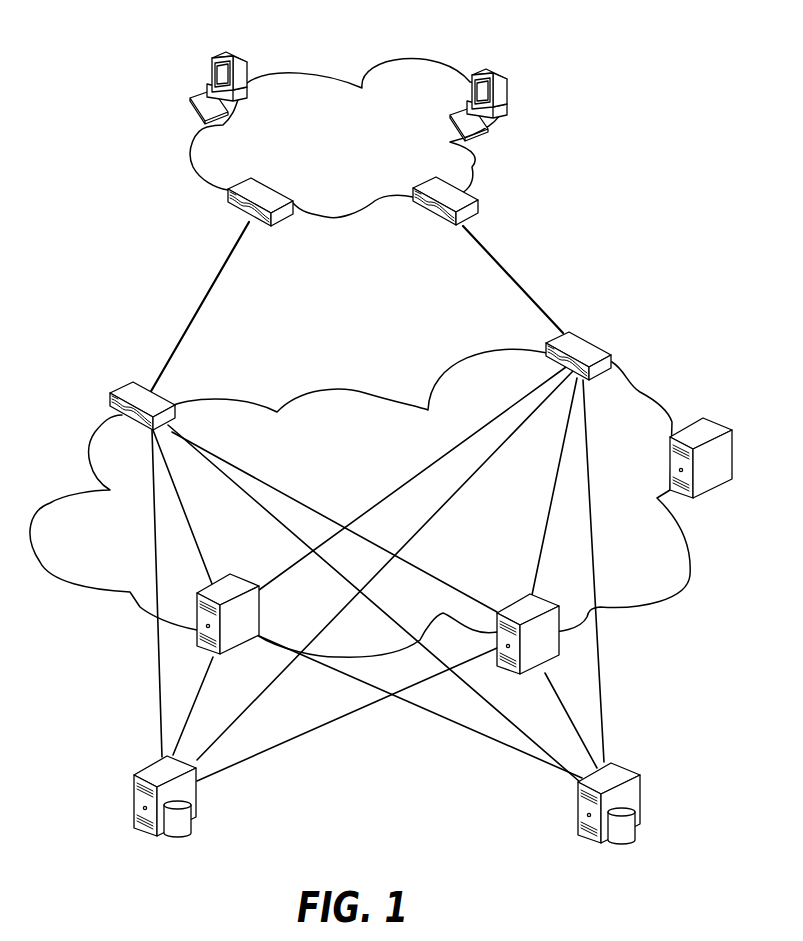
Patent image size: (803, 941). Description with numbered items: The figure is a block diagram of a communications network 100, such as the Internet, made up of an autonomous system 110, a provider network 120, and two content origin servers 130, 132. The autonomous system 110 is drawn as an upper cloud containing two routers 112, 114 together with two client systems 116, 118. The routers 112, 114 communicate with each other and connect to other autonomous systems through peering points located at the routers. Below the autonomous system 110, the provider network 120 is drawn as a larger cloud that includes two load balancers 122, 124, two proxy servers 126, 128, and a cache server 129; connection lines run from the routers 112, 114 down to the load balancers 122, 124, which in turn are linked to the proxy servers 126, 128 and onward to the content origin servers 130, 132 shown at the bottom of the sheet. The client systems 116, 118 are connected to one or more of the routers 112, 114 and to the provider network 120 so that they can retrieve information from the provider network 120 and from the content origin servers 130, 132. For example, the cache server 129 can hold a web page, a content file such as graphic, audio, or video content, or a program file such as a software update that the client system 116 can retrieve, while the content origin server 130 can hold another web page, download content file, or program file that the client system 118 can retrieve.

The communications network 100 is at (57, 887).
The autonomous system 110 is at (378, 60).
The router 112 is at (270, 178).
The router 114 is at (424, 177).
The client system 116 is at (226, 58).
The client system 118 is at (490, 76).
The provider network 120 is at (342, 391).
The load balancer 122 is at (123, 383).
The load balancer 124 is at (592, 340).
The proxy server 126 is at (241, 575).
The proxy server 128 is at (510, 603).
The cache server 129 is at (713, 418).
The content origin server 130 is at (148, 761).
The content origin server 132 is at (623, 762).